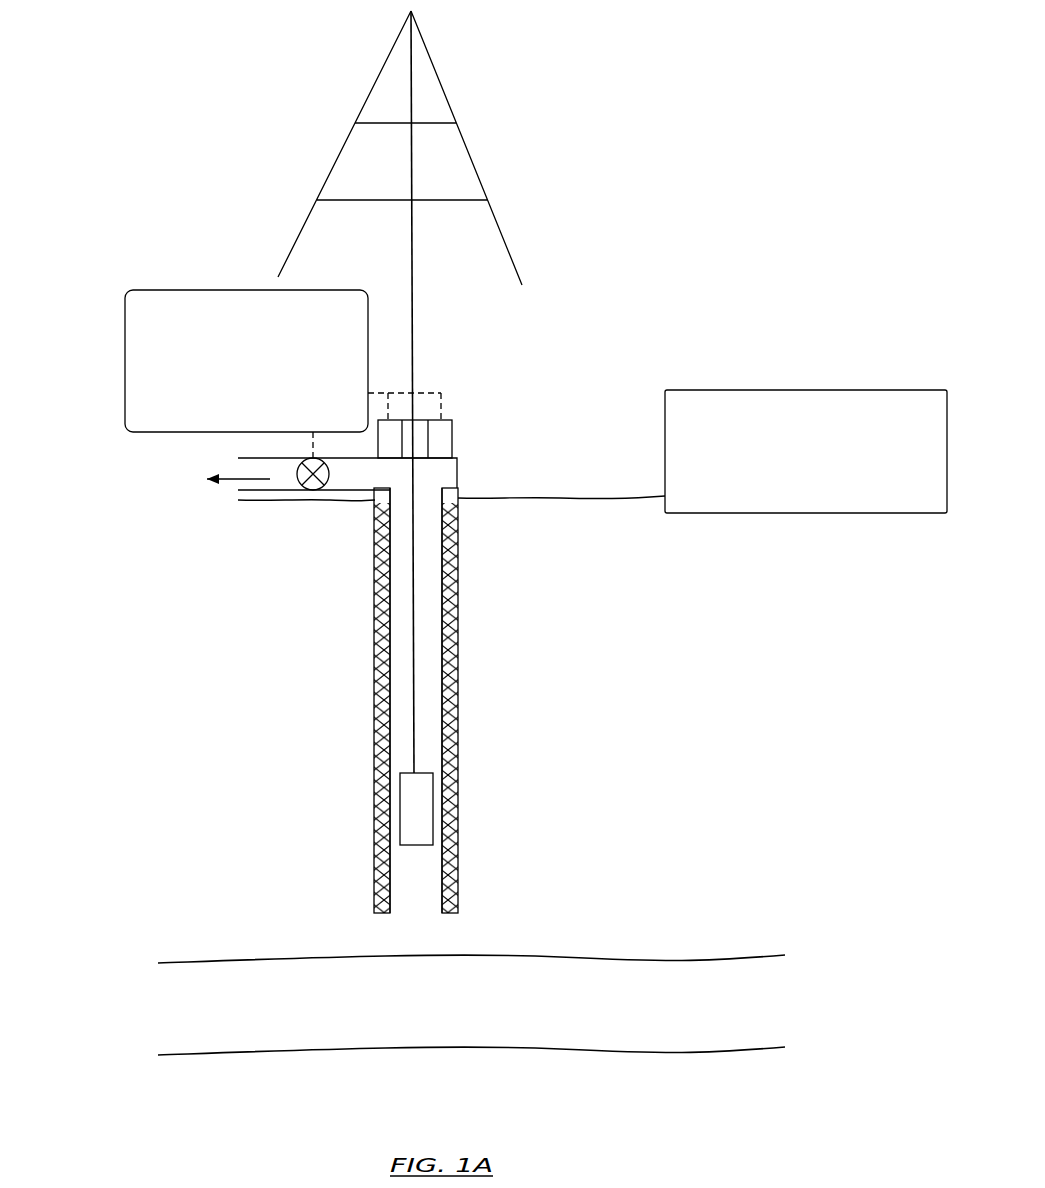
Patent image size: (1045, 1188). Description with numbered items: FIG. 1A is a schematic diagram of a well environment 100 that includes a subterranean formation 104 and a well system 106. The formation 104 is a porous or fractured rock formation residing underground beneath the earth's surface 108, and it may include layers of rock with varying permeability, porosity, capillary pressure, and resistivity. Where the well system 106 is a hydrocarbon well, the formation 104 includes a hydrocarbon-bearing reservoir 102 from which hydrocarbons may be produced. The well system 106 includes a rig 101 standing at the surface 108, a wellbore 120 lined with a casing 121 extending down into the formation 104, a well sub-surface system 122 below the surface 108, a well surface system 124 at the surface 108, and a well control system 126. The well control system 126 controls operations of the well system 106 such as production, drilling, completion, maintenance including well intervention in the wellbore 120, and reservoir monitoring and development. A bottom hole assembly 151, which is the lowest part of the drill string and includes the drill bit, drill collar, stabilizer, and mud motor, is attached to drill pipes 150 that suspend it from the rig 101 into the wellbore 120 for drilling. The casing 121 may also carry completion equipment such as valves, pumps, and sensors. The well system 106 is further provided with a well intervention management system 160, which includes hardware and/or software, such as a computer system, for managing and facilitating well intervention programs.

The well environment 100 is at (540, 178).
The rig 101 is at (462, 82).
The hydrocarbon-bearing reservoir 102 is at (570, 1025).
The subterranean formation 104 is at (600, 789).
The well system 106 is at (220, 266).
The surface 108 is at (545, 503).
The wellbore 120 is at (425, 705).
The casing 121 is at (458, 635).
The well sub-surface system 122 is at (373, 735).
The well surface system 124 is at (627, 348).
The well control system 126 is at (265, 399).
The drill pipes 150 is at (412, 643).
The bottom hole assembly (BHA) 151 is at (407, 810).
The well intervention management system 160 is at (827, 491).